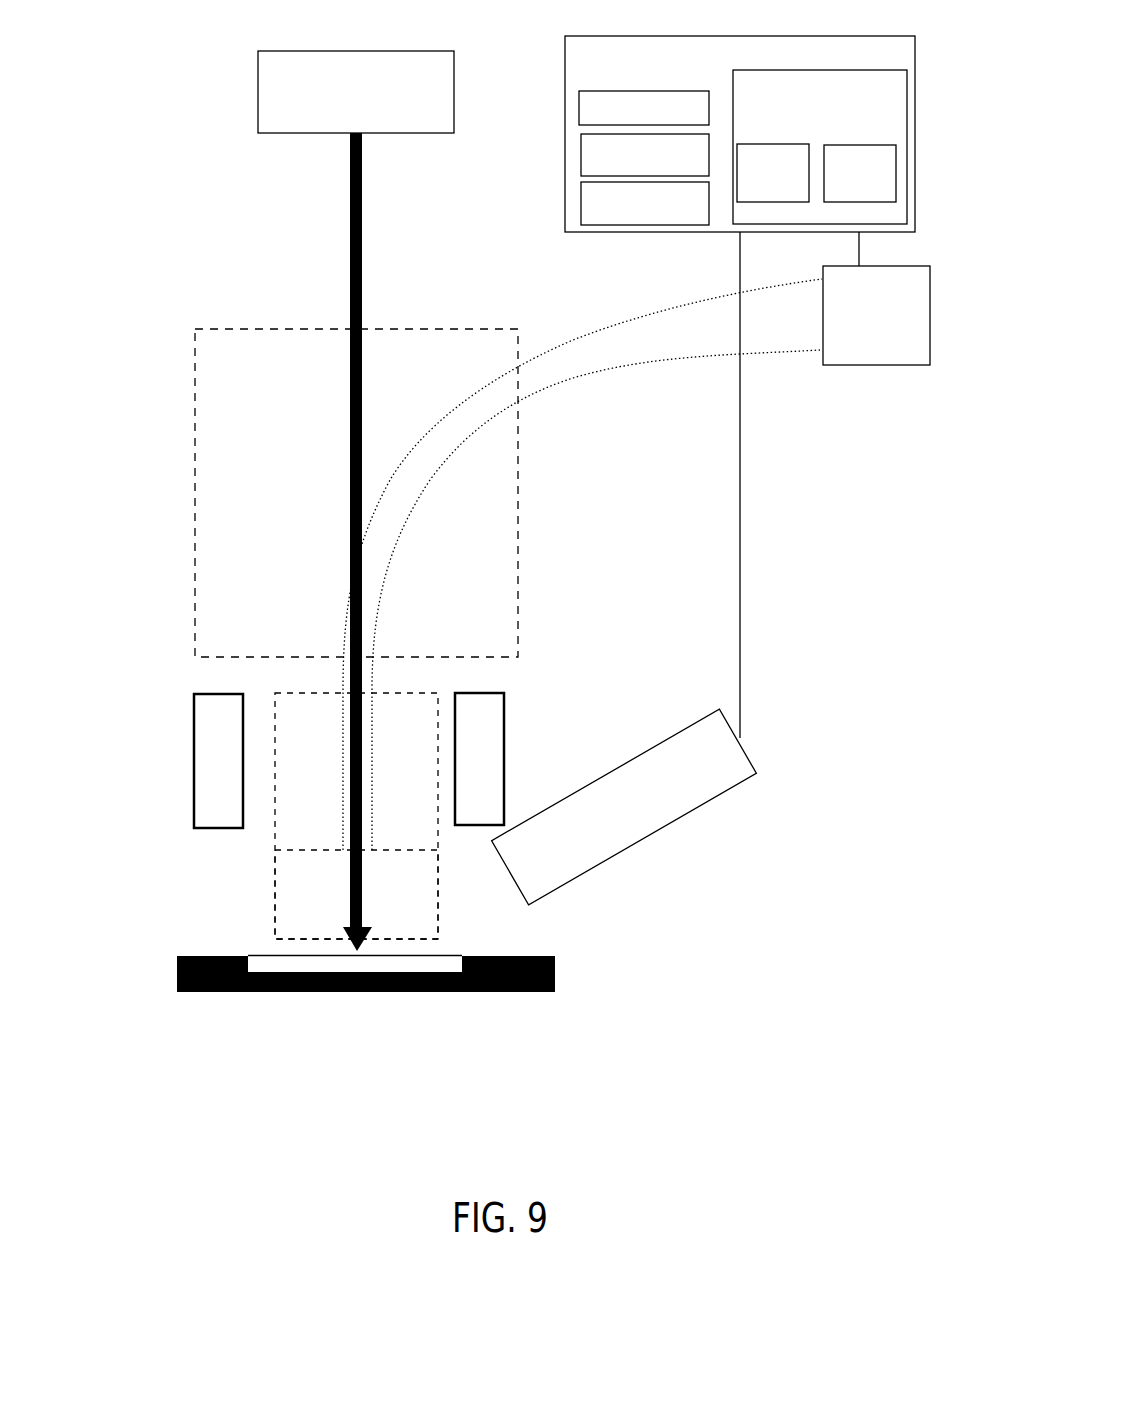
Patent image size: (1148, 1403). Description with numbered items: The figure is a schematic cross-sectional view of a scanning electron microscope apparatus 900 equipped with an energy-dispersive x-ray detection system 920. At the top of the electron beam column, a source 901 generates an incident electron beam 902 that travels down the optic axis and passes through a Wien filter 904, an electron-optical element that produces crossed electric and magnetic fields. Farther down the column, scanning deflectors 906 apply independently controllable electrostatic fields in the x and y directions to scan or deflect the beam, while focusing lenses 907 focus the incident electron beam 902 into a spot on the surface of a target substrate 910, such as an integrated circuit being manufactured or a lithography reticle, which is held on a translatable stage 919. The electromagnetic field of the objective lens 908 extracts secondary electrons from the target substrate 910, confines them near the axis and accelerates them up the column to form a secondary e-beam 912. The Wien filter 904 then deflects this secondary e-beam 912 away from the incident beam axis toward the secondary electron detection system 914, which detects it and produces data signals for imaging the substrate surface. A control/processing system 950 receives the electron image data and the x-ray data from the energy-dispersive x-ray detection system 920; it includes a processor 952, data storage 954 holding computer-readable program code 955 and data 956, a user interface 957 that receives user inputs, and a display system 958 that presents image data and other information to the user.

The scanning electron microscope apparatus 900 is at (710, 1218).
The source 901 is at (356, 92).
The incident electron beam 902 is at (260, 542).
The Wien filter 904 is at (356, 493).
The scanning deflectors 906 is at (176, 786).
The focusing lenses 907 is at (298, 760).
The objective lens 908 is at (296, 897).
The target substrate 910 is at (292, 957).
The secondary e-beam 912 is at (582, 564).
The secondary electron detection system 914 is at (876, 298).
The translatable stage 919 is at (211, 1006).
The energy-dispersive x-ray detection system 920 is at (624, 568).
The control/processing system 950 is at (727, 58).
The processor 952 is at (644, 108).
The data storage 954 is at (820, 147).
The computer-readable program code 955 is at (773, 173).
The data 956 is at (860, 173).
The user interface 957 is at (645, 155).
The display system 958 is at (645, 203).